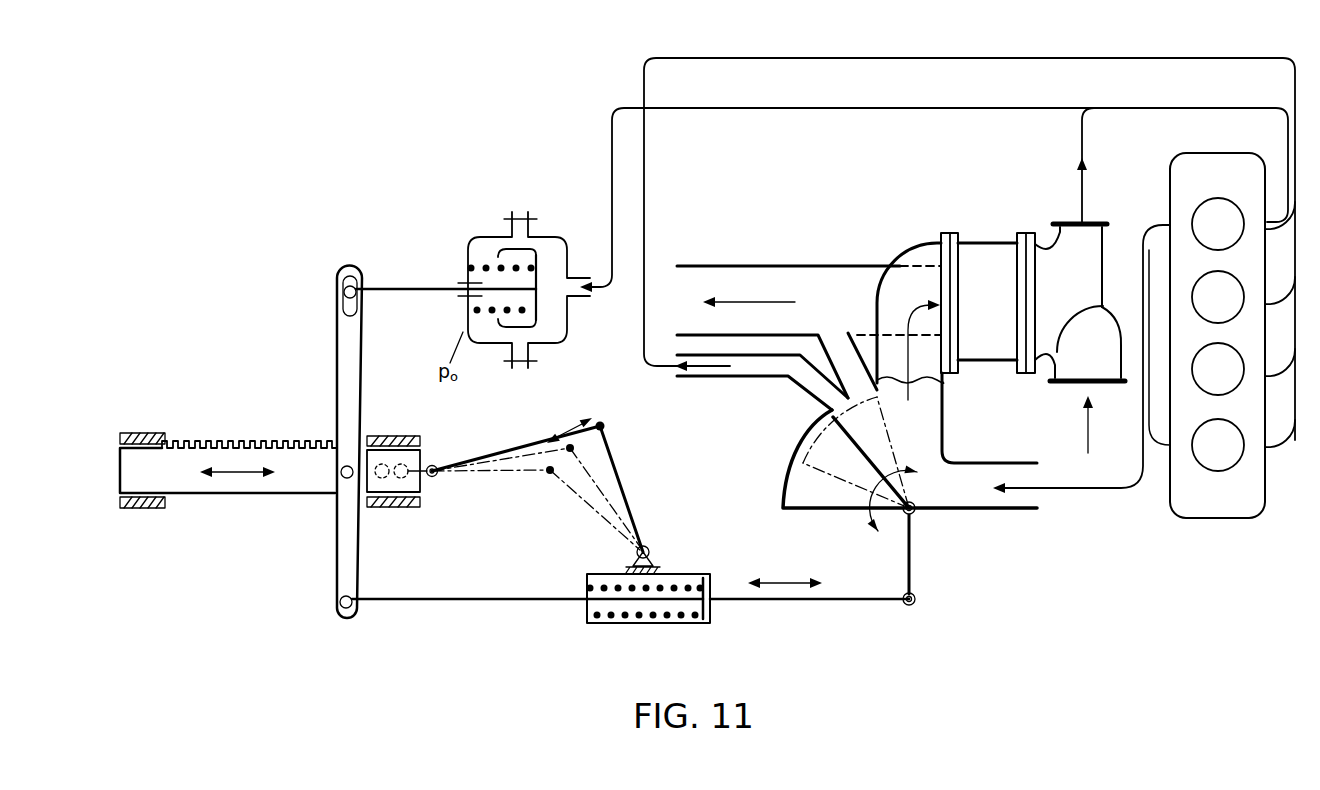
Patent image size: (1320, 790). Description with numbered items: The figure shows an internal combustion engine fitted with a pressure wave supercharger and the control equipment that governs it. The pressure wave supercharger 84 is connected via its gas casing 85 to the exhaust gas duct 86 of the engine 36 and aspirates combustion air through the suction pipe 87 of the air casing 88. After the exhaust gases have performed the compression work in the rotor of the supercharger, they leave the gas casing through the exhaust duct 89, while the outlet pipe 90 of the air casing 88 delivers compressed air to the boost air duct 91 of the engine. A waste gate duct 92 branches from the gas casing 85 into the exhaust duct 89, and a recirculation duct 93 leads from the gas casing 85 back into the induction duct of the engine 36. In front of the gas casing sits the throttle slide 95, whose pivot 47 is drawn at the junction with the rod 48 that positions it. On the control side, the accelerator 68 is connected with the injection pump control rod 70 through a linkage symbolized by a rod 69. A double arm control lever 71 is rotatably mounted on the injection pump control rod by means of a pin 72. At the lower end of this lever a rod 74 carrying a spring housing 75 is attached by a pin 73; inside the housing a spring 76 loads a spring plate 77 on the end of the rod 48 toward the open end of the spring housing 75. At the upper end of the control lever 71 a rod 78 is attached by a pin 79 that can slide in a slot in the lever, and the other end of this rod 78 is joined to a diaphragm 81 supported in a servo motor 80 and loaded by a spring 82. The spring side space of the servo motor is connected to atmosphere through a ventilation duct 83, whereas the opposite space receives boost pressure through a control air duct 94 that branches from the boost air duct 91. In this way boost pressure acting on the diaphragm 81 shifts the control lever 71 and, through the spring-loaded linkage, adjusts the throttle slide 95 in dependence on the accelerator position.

The engine 36 is at (1180, 175).
The flap pivot shaft 47 is at (910, 547).
The rod of the throttle slide 48 is at (827, 601).
The accelerator 68 is at (632, 515).
The rod 69 is at (530, 445).
The injection pump control rod 70 is at (238, 468).
The double arm control lever 71 is at (348, 370).
The pin 72 is at (342, 476).
The pin 73 is at (340, 603).
The rod 74 is at (458, 603).
The spring housing 75 is at (620, 627).
The spring 76 is at (682, 619).
The spring plate 77 is at (702, 598).
The rod 78 is at (417, 286).
The pin 79 is at (346, 289).
The servo motor 80 is at (488, 237).
The diaphragm 81 is at (538, 302).
The spring 82 is at (480, 266).
The ventilation duct 83 is at (465, 325).
The pressure wave supercharger 84 is at (990, 232).
The gas casing 85 is at (923, 288).
The exhaust gas duct 86 is at (970, 500).
The suction pipe 87 is at (1083, 363).
The air casing 88 is at (1078, 323).
The exhaust duct 89 is at (833, 313).
The outlet pipe 90 is at (1080, 240).
The boost air duct 91 is at (1165, 105).
The waste gate duct 92 is at (845, 357).
The recirculation duct 93 is at (873, 58).
The control air duct 94 is at (763, 108).
The throttle slide 95 is at (847, 467).